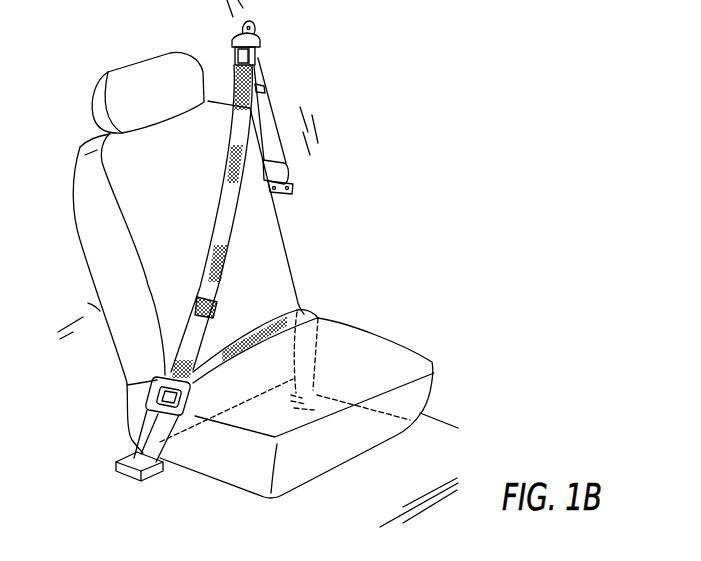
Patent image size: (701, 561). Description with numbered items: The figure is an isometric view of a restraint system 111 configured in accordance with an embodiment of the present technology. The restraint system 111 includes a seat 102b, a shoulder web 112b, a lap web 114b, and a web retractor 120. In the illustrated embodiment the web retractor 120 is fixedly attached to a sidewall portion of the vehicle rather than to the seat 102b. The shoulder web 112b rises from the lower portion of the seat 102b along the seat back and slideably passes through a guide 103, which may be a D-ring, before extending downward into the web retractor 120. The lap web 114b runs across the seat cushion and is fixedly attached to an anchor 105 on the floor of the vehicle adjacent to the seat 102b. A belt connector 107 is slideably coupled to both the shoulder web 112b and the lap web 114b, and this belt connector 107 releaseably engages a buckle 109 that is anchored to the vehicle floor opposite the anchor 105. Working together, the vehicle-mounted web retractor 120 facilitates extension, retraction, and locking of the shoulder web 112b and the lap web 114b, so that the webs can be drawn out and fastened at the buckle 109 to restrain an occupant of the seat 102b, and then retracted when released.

The guide 103 is at (233, 48).
The restraint system 111 is at (366, 165).
The web retractor 120 is at (295, 180).
The shoulder web 112b is at (227, 222).
The belt connector 107 is at (162, 378).
The lap web 114b is at (208, 362).
The anchor 105 is at (320, 393).
The buckle 109 is at (185, 407).
The seat 102b is at (316, 469).